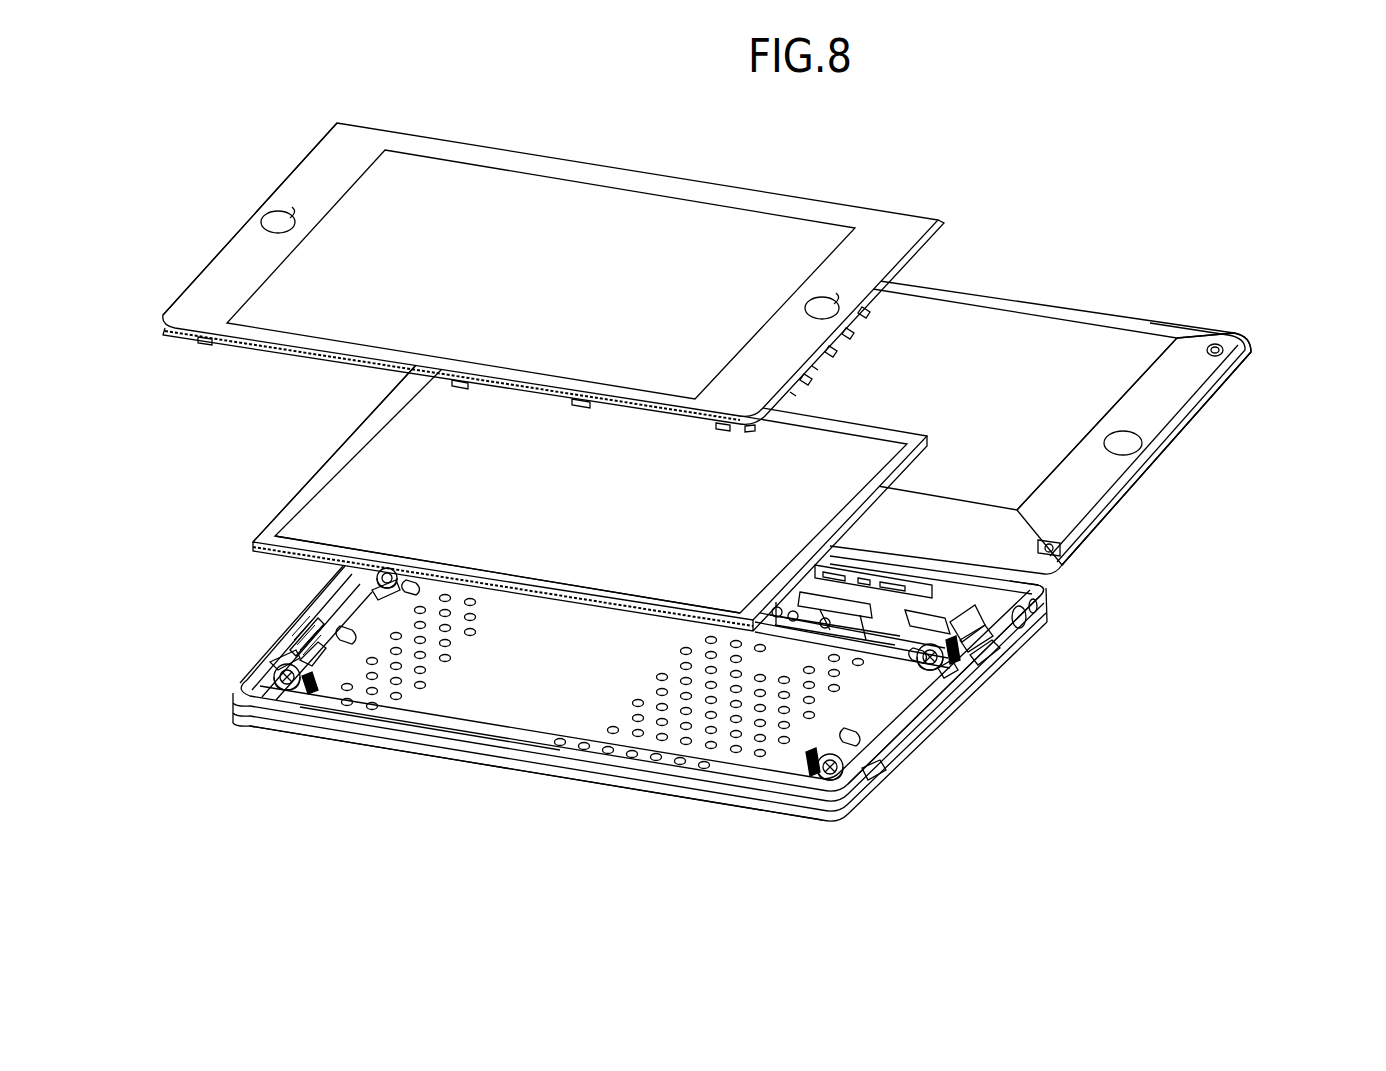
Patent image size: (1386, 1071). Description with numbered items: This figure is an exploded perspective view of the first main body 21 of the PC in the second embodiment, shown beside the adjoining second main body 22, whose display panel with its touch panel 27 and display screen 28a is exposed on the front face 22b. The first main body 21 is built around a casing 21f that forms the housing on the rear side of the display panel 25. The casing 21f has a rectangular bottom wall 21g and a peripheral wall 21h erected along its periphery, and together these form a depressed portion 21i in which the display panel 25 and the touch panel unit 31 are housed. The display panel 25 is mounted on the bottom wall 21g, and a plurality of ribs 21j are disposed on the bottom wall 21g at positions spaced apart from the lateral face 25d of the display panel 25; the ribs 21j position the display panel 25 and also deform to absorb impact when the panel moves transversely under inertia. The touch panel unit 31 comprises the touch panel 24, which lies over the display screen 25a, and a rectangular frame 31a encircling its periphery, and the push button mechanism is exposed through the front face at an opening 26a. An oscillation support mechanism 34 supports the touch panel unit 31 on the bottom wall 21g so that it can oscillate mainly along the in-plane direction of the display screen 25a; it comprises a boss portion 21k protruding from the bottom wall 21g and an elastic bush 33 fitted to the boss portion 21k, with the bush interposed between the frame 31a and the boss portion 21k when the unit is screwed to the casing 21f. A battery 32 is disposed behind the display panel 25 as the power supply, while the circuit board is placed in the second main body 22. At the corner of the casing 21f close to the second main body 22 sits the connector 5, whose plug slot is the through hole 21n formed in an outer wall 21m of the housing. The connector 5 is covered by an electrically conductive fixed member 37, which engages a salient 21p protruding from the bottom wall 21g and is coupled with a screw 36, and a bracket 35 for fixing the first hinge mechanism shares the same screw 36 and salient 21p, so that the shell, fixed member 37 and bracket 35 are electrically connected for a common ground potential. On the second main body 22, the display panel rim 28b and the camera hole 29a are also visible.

The connector 5 is at (962, 640).
The first main body 21 is at (650, 775).
The casing 21f is at (380, 727).
The bottom wall 21g is at (490, 722).
The peripheral wall 21h is at (873, 750).
The depressed portion 21i is at (305, 610).
The ribs 21j is at (412, 583).
The boss portion 21k is at (305, 690).
The outer wall 21m is at (1016, 638).
The through hole 21n is at (1044, 614).
The salient 21p is at (987, 665).
The second main body 22 is at (1196, 322).
The front face 22b is at (1183, 398).
The touch panel 24 is at (808, 235).
The display panel 25 is at (412, 440).
The display screen 25a is at (355, 478).
The lateral face 25d is at (286, 507).
The button hole 26a is at (275, 222).
The touch panel 27 is at (1045, 332).
The display screen 28a is at (1088, 338).
The window rim 28b is at (1138, 330).
The camera hole 29a is at (1130, 443).
The touch panel unit 31 is at (298, 153).
The frame 31a is at (232, 282).
The battery 32 is at (573, 790).
The elastic bush 33 is at (283, 655).
The oscillation support mechanism 34 is at (272, 674).
The bracket 35 is at (930, 632).
The screw 36 is at (930, 622).
The fixed member 37 is at (987, 652).